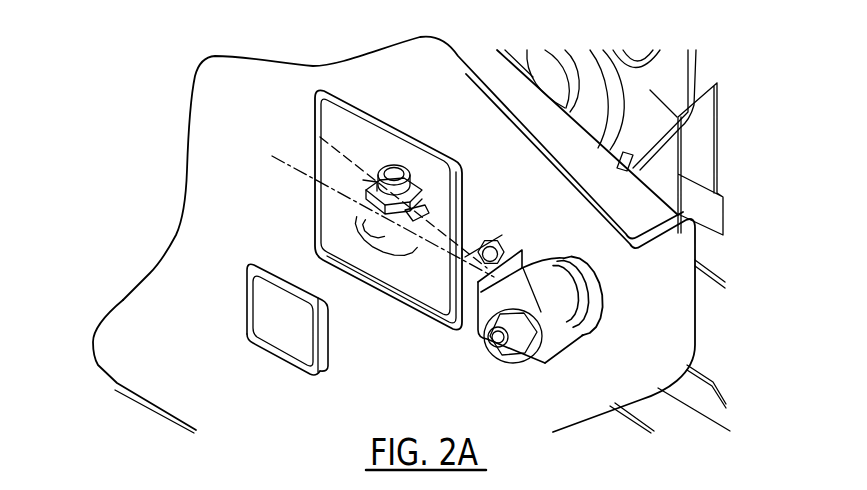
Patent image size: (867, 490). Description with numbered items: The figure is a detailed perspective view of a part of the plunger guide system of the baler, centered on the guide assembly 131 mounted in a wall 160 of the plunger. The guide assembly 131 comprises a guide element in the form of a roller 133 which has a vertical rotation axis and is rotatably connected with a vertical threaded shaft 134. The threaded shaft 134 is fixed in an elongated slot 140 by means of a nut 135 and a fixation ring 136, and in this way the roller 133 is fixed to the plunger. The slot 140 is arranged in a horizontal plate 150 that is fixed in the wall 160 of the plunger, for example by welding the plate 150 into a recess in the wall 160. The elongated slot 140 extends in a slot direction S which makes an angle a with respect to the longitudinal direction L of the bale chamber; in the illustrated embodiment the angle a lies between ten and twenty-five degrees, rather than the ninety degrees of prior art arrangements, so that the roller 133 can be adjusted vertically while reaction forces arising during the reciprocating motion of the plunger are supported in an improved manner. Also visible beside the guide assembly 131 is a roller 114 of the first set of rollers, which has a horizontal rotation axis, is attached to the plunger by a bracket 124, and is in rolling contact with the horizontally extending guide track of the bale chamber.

The roller 114 is at (555, 323).
The bracket 124 is at (520, 243).
The guide assembly 131 is at (352, 130).
The roller 133 is at (385, 247).
The threaded shaft 134 is at (394, 165).
The nut 135 is at (415, 182).
The fixation ring 136 is at (442, 197).
The slot 140 is at (443, 214).
The horizontal plate 150 is at (447, 221).
The wall 160 is at (160, 312).
The slot direction S is at (313, 124).
The longitudinal direction L is at (289, 167).
The angle a is at (320, 132).